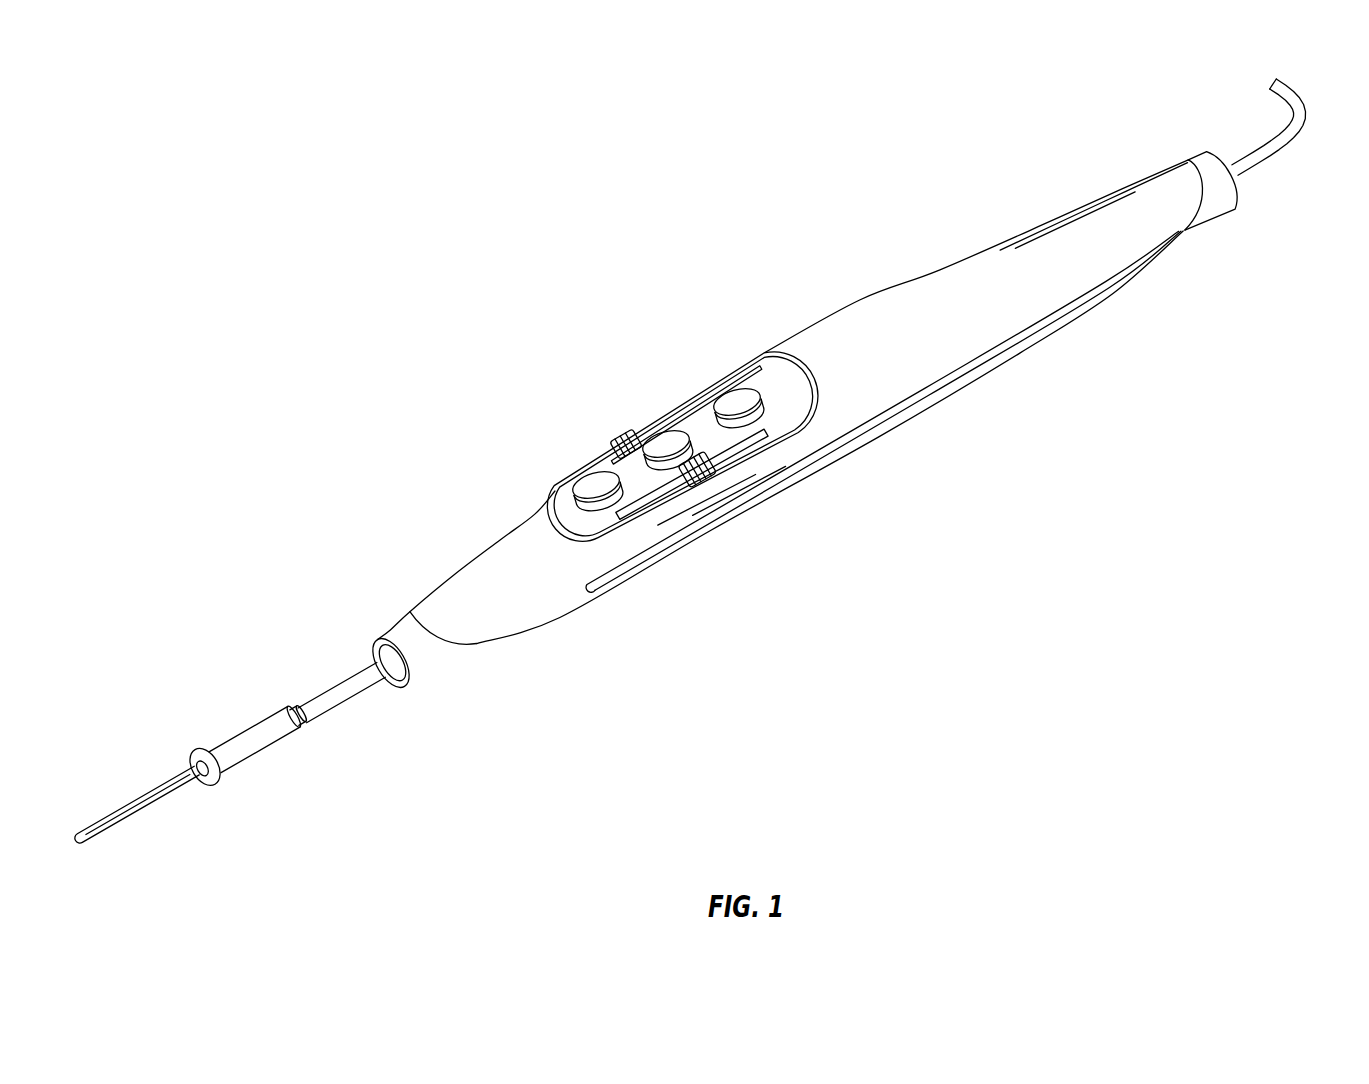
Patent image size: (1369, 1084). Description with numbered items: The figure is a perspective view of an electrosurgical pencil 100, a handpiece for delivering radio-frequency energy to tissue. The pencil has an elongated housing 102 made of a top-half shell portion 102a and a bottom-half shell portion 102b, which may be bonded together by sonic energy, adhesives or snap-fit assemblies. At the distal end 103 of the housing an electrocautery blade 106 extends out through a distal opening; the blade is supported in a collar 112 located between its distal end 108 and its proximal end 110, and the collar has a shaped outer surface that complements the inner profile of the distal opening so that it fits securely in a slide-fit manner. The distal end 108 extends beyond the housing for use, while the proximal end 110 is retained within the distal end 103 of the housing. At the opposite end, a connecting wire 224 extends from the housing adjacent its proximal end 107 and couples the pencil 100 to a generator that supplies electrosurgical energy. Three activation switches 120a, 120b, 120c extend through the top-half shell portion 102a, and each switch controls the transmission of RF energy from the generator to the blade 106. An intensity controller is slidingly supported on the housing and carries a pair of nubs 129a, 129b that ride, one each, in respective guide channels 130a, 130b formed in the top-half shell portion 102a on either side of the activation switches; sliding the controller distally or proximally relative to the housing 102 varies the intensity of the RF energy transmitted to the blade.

The electrosurgical pencil 100 is at (566, 331).
The elongated housing 102 is at (832, 316).
The top-half shell portion 102a is at (919, 290).
The bottom-half shell portion 102b is at (997, 357).
The distal end of housing 103 is at (380, 656).
The electrocautery blade 106 is at (130, 789).
The proximal end of housing 107 is at (1243, 190).
The distal end of electrocautery blade 108 is at (78, 848).
The proximal end of electrocautery blade 110 is at (328, 692).
The collar 112 is at (249, 730).
The activation switch 120a is at (590, 478).
The activation switch 120b is at (655, 428).
The activation switch 120c is at (736, 392).
The nub 129a is at (622, 438).
The nub 129b is at (705, 480).
The guide channel 130a is at (684, 400).
The guide channel 130b is at (762, 436).
The connecting wire 224 is at (1300, 96).